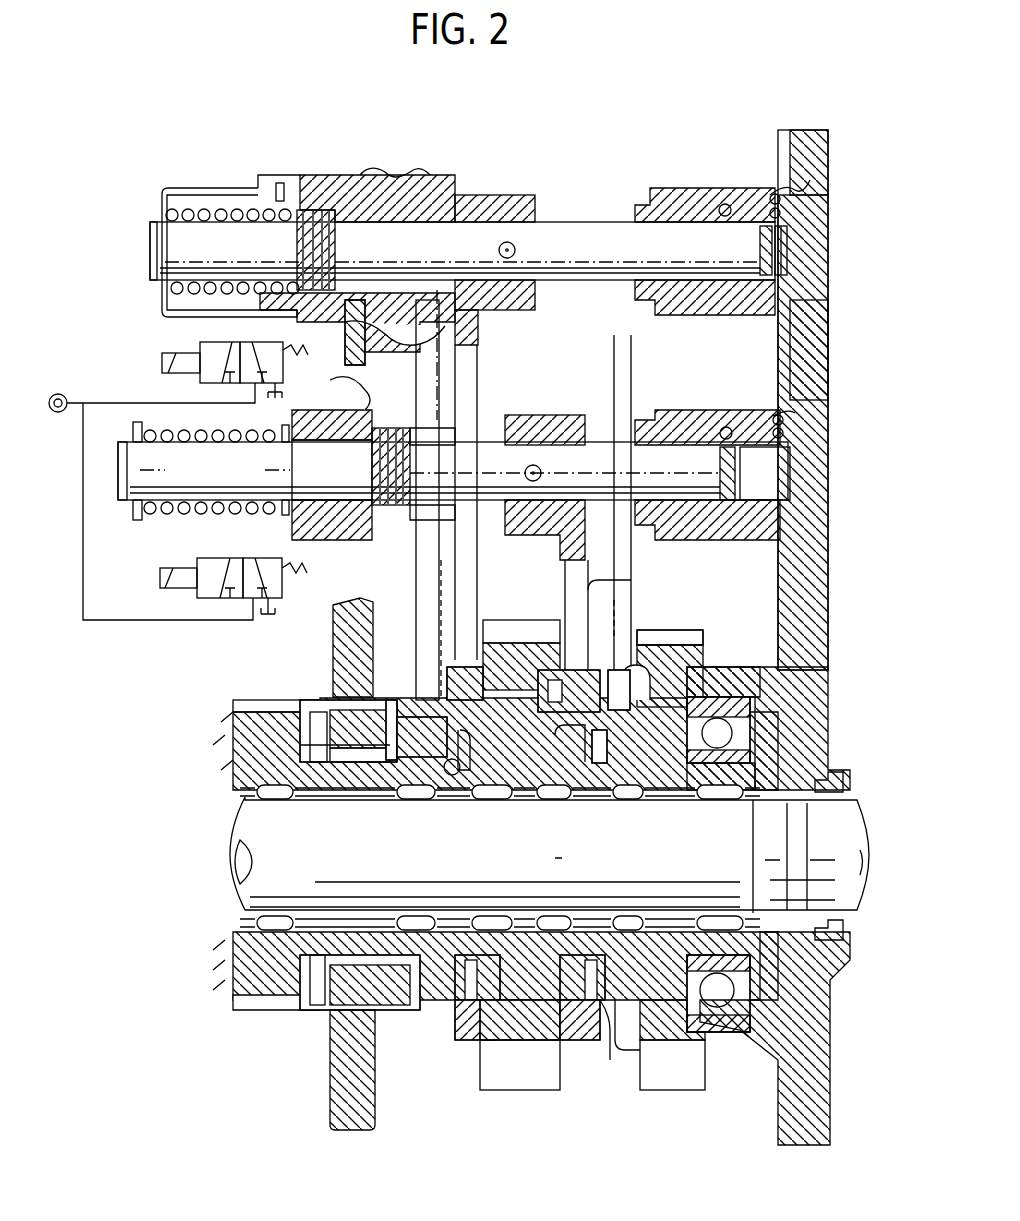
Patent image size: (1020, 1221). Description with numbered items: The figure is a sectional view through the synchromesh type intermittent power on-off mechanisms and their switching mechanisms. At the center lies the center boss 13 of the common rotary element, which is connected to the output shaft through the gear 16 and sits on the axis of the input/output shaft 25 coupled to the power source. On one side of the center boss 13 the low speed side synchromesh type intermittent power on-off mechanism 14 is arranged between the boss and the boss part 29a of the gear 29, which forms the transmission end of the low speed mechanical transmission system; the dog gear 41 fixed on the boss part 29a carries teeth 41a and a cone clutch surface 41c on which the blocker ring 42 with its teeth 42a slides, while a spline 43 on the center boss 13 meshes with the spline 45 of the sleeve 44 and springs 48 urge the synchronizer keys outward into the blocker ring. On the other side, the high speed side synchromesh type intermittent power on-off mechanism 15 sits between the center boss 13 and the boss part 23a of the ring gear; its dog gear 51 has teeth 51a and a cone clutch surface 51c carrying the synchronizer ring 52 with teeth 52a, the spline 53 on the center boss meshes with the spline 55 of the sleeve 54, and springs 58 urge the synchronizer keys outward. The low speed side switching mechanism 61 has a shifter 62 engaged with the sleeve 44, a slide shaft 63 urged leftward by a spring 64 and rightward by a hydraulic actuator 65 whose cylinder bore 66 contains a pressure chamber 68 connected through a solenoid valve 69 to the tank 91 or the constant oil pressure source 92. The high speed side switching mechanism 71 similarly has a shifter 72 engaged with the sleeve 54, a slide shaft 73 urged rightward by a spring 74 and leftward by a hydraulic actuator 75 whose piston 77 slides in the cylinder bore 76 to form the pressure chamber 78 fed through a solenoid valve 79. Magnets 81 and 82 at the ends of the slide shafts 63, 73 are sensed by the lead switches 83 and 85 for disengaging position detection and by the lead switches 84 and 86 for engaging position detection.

The center boss 13 is at (517, 642).
The low speed side synchromesh type intermittent power on-off mechanism 14 is at (614, 1050).
The high speed side synchromesh type intermittent power on-off mechanism 15 is at (407, 1045).
The gear 16 is at (517, 1090).
The boss part of ring gear 23a is at (365, 781).
The input/output shaft 25 is at (841, 886).
The gear 29 is at (678, 1083).
The boss part of gear 29a is at (650, 787).
The dog gear 41 is at (740, 700).
The teeth of dog gear 41a is at (692, 695).
The cone clutch surface 41c is at (572, 770).
The blocker ring 42 is at (605, 765).
The teeth of blocker ring 42a is at (655, 660).
The spline 43 is at (575, 1040).
The sleeve 44 is at (545, 650).
The spline 45 is at (603, 1045).
The spring 48 is at (577, 961).
The dog gear 51 is at (340, 711).
The teeth of dog gear 51a is at (425, 716).
The cone clutch surface 51c is at (470, 776).
The synchronizer ring 52 is at (442, 776).
The teeth of synchronizer ring 52a is at (425, 716).
The spline 53 is at (472, 1038).
The sleeve 54 is at (504, 650).
The spline 55 is at (455, 1010).
The spring 58 is at (482, 961).
The low speed side switching mechanism 61 is at (831, 425).
The shifter 62 is at (620, 598).
The slide shaft 63 is at (558, 450).
The spring 64 is at (158, 510).
The hydraulic actuator 65 is at (410, 432).
The cylinder bore 66 is at (452, 422).
The pressure chamber 68 is at (348, 502).
The solenoid valve 69 is at (220, 600).
The high speed side switching mechanism 71 is at (831, 193).
The shifter 72 is at (450, 630).
The slide shaft 73 is at (555, 222).
The spring 74 is at (235, 190).
The hydraulic actuator 75 is at (344, 190).
The cylinder bore 76 is at (276, 183).
The piston 77 is at (320, 208).
The pressure chamber 78 is at (386, 200).
The solenoid valve 79 is at (200, 383).
The magnet 81 is at (737, 450).
The magnet 82 is at (788, 232).
The lead switch for disengaging position detection 83 is at (723, 433).
The lead switch for engaging position detection 84 is at (800, 423).
The lead switch for disengaging position detection 85 is at (810, 193).
The lead switch for engaging position detection 86 is at (724, 203).
The tank 91 is at (263, 620).
The constant oil pressure source 92 is at (60, 392).